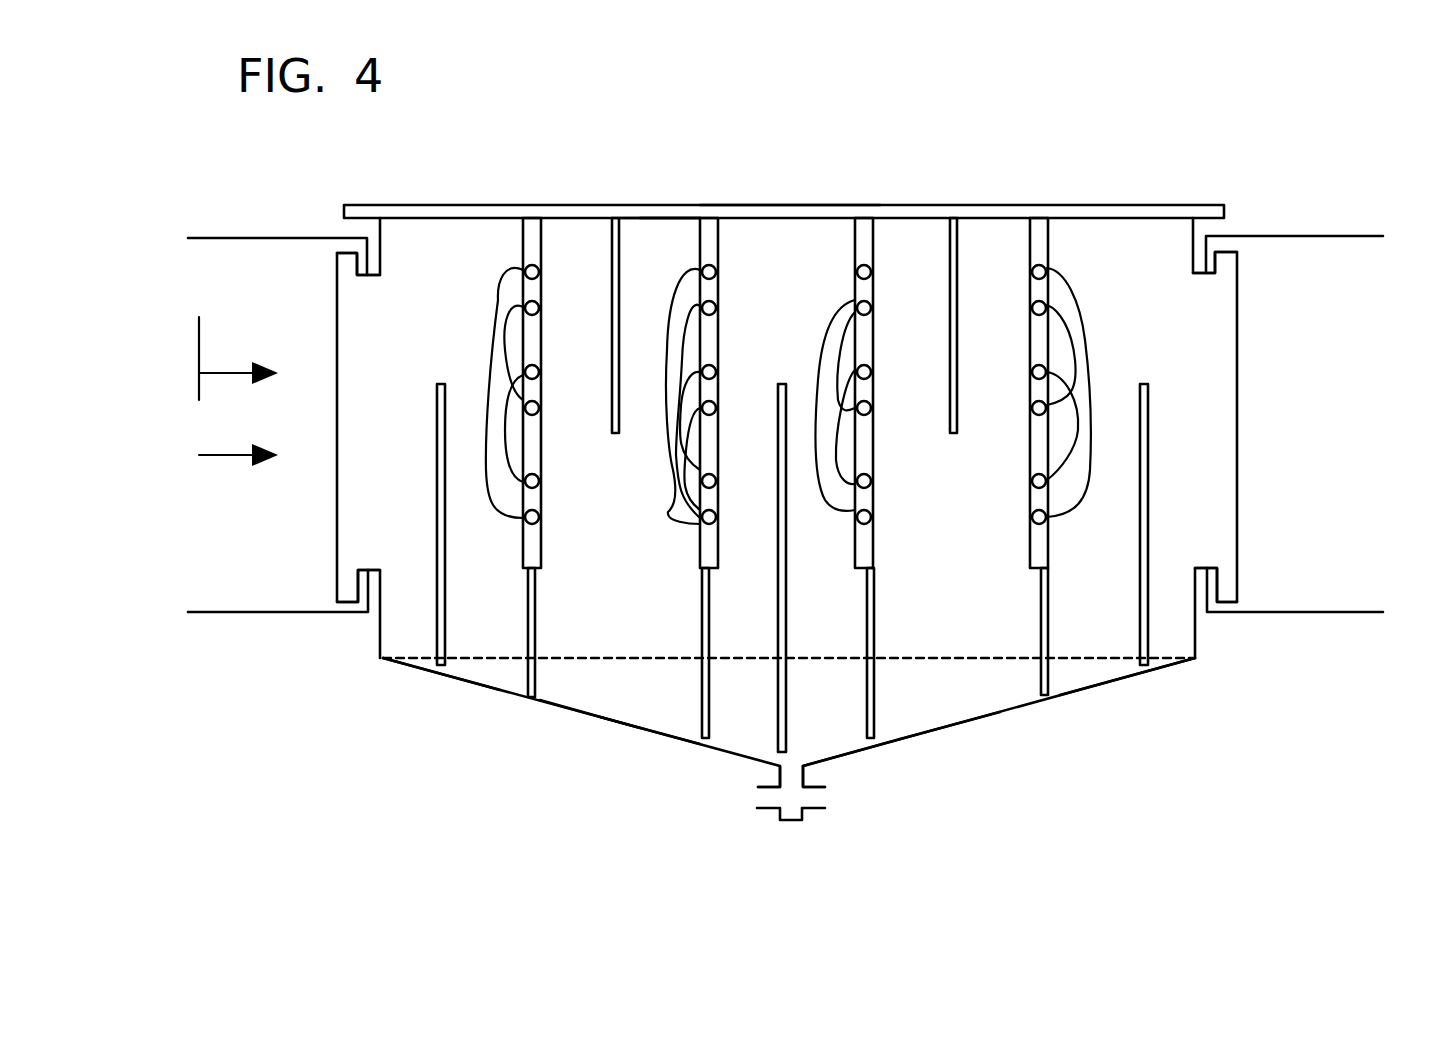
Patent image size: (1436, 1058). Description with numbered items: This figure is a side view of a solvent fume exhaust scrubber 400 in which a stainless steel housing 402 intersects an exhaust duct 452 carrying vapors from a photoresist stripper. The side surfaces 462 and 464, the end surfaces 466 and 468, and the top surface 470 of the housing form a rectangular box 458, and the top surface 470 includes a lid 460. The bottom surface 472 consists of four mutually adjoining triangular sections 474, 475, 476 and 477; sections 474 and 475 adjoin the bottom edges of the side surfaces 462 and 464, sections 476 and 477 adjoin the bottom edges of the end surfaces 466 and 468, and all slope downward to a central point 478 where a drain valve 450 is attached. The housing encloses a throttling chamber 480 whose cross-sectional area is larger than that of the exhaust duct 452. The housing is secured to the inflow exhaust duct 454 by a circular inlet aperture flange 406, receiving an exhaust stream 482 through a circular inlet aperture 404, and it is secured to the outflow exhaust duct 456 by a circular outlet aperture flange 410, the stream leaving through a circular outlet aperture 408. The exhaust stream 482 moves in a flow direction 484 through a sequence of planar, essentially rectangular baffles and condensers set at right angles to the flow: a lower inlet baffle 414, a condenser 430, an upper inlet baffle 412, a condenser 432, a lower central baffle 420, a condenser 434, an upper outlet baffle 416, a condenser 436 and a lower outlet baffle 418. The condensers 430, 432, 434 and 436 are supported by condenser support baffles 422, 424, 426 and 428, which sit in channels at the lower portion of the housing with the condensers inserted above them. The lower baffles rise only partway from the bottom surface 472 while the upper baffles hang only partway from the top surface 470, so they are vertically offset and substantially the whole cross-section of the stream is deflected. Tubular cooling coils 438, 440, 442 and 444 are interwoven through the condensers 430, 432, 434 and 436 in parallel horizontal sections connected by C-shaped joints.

The solvent fume exhaust scrubber 400 is at (1141, 820).
The housing 402 is at (982, 715).
The circular inlet aperture 404 is at (337, 483).
The circular inlet aperture flange 406 is at (337, 284).
The circular outlet aperture 408 is at (1237, 480).
The circular outlet aperture flange 410 is at (1290, 565).
The upper inlet baffle 412 is at (596, 262).
The lower inlet baffle 414 is at (438, 625).
The upper outlet baffle 416 is at (960, 262).
The lower outlet baffle 418 is at (1148, 620).
The lower central baffle 420 is at (780, 728).
The condenser support baffle 422 is at (523, 672).
The condenser support baffle 424 is at (700, 715).
The condenser support baffle 426 is at (875, 705).
The condenser support baffle 428 is at (1050, 668).
The condenser 430 is at (522, 248).
The condenser 432 is at (720, 247).
The condenser 434 is at (873, 248).
The condenser 436 is at (1048, 247).
The tubular cooling coil 438 is at (523, 272).
The tubular cooling coil 440 is at (700, 523).
The tubular cooling coil 442 is at (855, 300).
The tubular cooling coil 444 is at (1043, 300).
The drain valve 450 is at (820, 797).
The exhaust duct 452 is at (296, 238).
The inflow exhaust duct 454 is at (297, 614).
The outflow exhaust duct 456 is at (1287, 612).
The rectangular box 458 is at (812, 625).
The lid 460 is at (1245, 160).
The side surface 462 is at (670, 228).
The side surface 464 is at (680, 237).
The end surface 466 is at (337, 548).
The end surface 468 is at (1237, 350).
The top surface 470 is at (793, 205).
The bottom surface 472 is at (1102, 683).
The triangular section 474 is at (590, 693).
The triangular section 475 is at (625, 703).
The triangular section 476 is at (950, 718).
The triangular section 477 is at (468, 685).
The central point 478 is at (792, 821).
The throttling chamber 480 is at (630, 571).
The exhaust stream 482 is at (234, 442).
The flow direction 484 is at (238, 358).